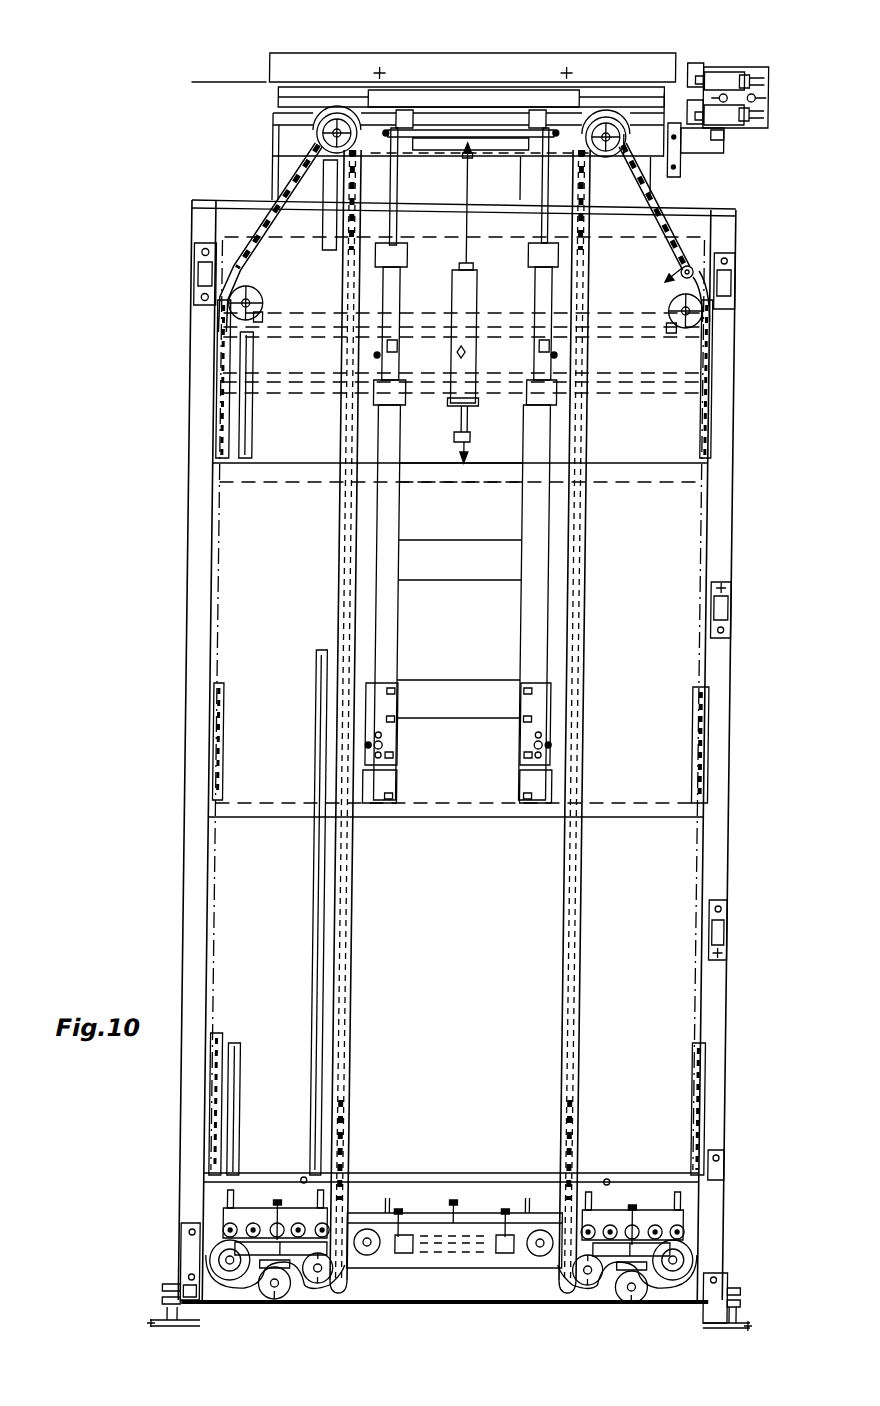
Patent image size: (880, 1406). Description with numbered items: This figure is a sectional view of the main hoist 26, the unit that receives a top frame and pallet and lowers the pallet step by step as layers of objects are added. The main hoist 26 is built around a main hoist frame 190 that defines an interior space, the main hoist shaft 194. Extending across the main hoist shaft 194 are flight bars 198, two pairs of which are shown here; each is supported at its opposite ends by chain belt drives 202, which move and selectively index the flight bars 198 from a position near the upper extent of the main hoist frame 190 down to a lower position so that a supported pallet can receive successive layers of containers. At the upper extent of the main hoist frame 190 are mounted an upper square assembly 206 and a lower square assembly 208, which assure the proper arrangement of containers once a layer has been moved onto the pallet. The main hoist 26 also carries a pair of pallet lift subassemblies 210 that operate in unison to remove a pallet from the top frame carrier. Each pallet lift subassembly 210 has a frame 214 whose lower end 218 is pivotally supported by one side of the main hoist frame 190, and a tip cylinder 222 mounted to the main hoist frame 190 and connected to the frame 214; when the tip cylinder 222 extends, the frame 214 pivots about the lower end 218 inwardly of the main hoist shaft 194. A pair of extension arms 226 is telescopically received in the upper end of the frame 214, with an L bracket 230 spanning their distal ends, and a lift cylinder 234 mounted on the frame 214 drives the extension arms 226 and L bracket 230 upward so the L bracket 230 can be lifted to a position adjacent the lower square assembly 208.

The main hoist 26 is at (177, 325).
The main hoist frame 190 is at (198, 808).
The main hoist shaft 194 is at (284, 878).
The flight bars 198 is at (256, 285).
The chain belt drives 202 is at (227, 1035).
The upper square assembly 206 is at (213, 82).
The lower square assembly 208 is at (280, 105).
The pallet lift subassembly 210 is at (406, 532).
The frame 214 is at (406, 666).
The lower end 218 is at (527, 745).
The tip cylinder 222 is at (375, 350).
The extension arms 226 is at (428, 190).
The L bracket 230 is at (425, 96).
The lift cylinder 234 is at (470, 303).